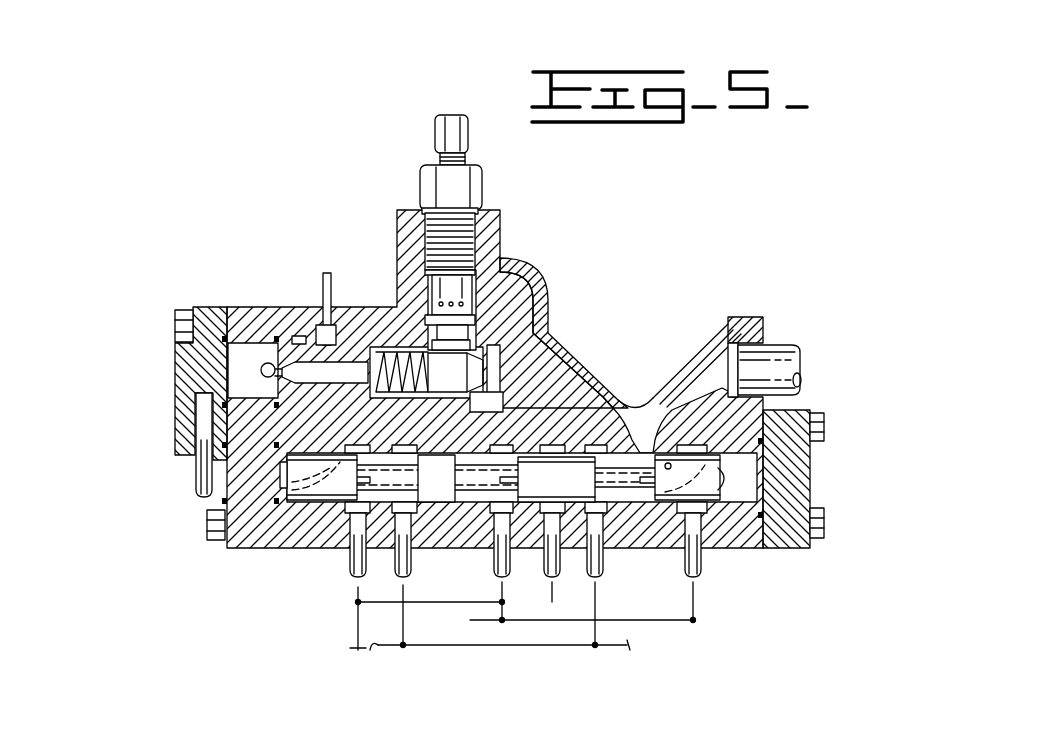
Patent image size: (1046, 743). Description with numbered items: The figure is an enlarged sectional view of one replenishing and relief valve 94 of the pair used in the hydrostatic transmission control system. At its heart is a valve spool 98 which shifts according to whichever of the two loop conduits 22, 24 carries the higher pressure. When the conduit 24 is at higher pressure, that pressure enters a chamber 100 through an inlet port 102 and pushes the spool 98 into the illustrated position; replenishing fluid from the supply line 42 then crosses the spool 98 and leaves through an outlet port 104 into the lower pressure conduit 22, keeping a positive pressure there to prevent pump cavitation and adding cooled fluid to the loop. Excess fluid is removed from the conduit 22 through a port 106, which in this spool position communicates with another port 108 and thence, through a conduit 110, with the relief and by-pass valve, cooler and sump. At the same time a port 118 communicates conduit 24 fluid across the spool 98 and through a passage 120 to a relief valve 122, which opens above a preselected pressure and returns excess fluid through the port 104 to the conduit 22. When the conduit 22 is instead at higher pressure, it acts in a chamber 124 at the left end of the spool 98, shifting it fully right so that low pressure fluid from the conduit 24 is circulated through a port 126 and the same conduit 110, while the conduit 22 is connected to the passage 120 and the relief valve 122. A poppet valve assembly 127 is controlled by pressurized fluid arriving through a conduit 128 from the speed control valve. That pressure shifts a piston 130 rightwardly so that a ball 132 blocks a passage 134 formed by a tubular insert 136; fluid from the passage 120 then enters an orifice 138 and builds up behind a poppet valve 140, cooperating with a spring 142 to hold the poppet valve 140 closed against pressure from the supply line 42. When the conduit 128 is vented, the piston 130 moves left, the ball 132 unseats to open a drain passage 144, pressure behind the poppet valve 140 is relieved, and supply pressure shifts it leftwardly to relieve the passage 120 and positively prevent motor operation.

The replenishing and relief valve 94 is at (641, 287).
The poppet valve 140 is at (480, 363).
The piston 130 is at (244, 340).
The conduit 128 is at (200, 473).
The ball 132 is at (258, 355).
The passage 134 is at (325, 385).
The spring 142 is at (422, 348).
The passage 120 is at (457, 415).
The orifice 138 is at (480, 397).
The drain passage 144 is at (332, 300).
The tubular insert 136 is at (333, 345).
The poppet valve assembly 127 is at (300, 322).
The relief valve 122 is at (483, 296).
The chamber 124 is at (283, 478).
The valve spool 98 is at (556, 479).
The port 108 is at (353, 523).
The port 106 is at (405, 527).
The port 118 is at (505, 527).
The port 126 is at (548, 527).
The outlet port 104 is at (598, 525).
The inlet port 102 is at (695, 525).
The chamber 100 is at (757, 490).
The supply line 42 is at (783, 363).
The conduit 110 is at (358, 615).
The conduit 22 is at (470, 620).
The conduit 24 is at (693, 620).